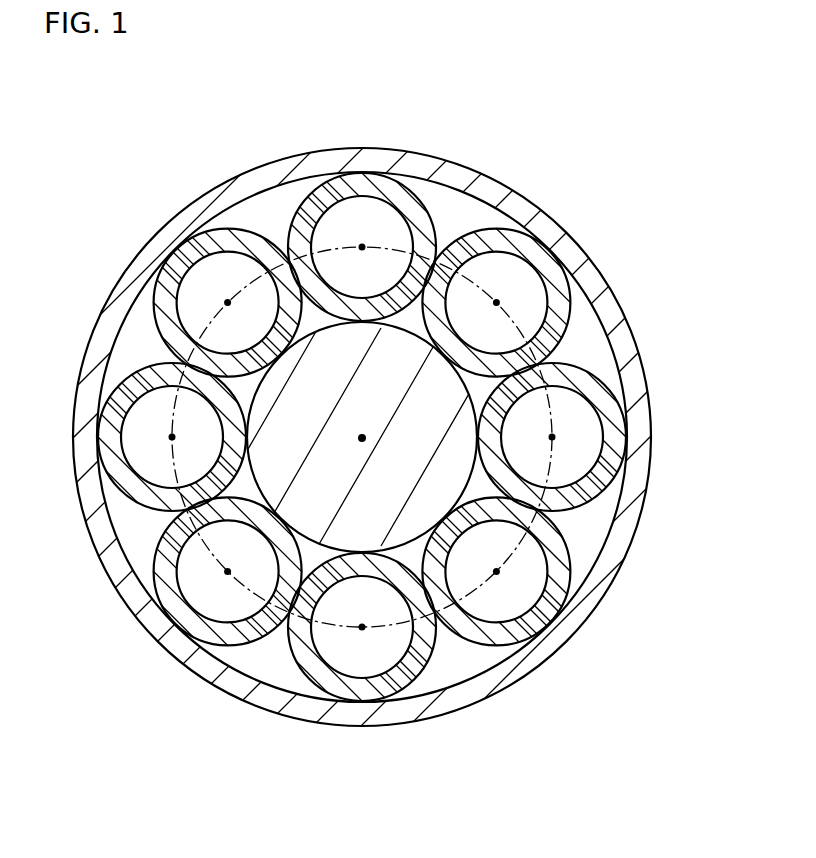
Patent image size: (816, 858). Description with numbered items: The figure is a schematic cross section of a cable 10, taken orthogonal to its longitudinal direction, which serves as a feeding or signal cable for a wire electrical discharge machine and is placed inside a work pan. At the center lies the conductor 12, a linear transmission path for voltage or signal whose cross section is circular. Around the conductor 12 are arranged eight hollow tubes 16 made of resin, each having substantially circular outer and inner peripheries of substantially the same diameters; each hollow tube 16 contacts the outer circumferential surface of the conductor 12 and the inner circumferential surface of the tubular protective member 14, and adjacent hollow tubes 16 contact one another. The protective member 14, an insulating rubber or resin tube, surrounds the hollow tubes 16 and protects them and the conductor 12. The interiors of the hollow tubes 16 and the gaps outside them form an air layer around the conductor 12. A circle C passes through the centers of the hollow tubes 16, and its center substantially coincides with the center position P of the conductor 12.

The cable 10 is at (132, 111).
The conductor 12 is at (298, 398).
The protective member 14 is at (440, 167).
The hollow tubes 16 is at (357, 188).
The center position of the conductor P is at (354, 438).
The circle passing through the center positions of the hollow tubes C is at (524, 322).